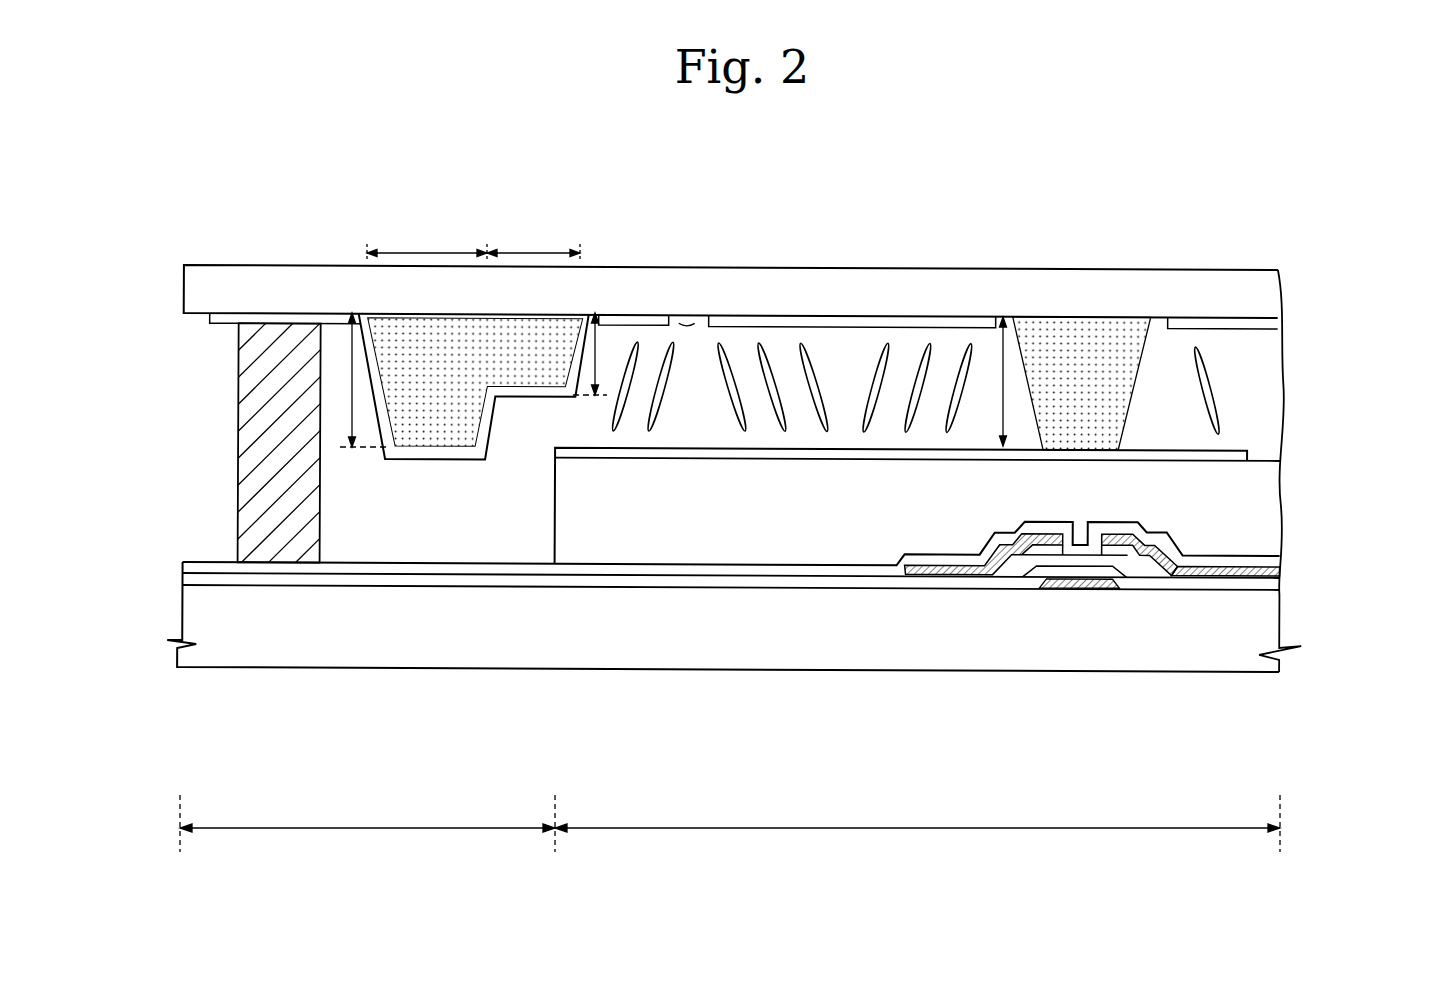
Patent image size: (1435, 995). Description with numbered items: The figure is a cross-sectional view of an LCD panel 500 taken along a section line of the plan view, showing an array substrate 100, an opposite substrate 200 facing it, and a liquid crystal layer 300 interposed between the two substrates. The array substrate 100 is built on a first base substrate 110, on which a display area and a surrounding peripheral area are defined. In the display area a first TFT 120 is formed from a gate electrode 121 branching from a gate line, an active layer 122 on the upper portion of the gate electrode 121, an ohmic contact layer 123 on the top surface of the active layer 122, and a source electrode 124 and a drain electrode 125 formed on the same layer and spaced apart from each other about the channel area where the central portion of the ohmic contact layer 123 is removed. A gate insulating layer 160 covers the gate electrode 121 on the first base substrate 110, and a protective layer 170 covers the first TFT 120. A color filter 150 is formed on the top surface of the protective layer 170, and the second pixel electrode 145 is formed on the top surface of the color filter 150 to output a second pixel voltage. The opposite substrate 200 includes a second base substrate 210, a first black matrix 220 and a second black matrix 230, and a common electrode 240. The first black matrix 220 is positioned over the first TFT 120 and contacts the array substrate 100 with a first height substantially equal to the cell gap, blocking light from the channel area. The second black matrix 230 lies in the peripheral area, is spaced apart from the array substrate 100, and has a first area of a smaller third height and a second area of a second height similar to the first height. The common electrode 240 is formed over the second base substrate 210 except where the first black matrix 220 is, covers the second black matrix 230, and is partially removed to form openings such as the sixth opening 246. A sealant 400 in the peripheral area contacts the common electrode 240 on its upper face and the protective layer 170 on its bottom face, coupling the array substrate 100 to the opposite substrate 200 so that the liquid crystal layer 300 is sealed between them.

The LCD panel 500 is at (1263, 153).
The opposite substrate 200 is at (440, 193).
The second base substrate 210 is at (622, 270).
The first black matrix 220 is at (1075, 333).
The second black matrix 230 is at (456, 328).
The common electrode 240 is at (868, 322).
The sixth opening 246 is at (687, 319).
The liquid crystal layer 300 is at (1262, 385).
The sealant 400 is at (262, 430).
The array substrate 100 is at (613, 752).
The first base substrate 110 is at (917, 653).
The first TFT 120 is at (1205, 710).
The gate electrode 121 is at (1073, 590).
The active layer 122 is at (1027, 576).
The ohmic contact layer 123 is at (1120, 556).
The source electrode 124 is at (1178, 580).
The drain electrode 125 is at (975, 580).
The second pixel electrode 145 is at (637, 452).
The color filter 150 is at (727, 545).
The gate insulating layer 160 is at (792, 580).
The protective layer 170 is at (863, 570).